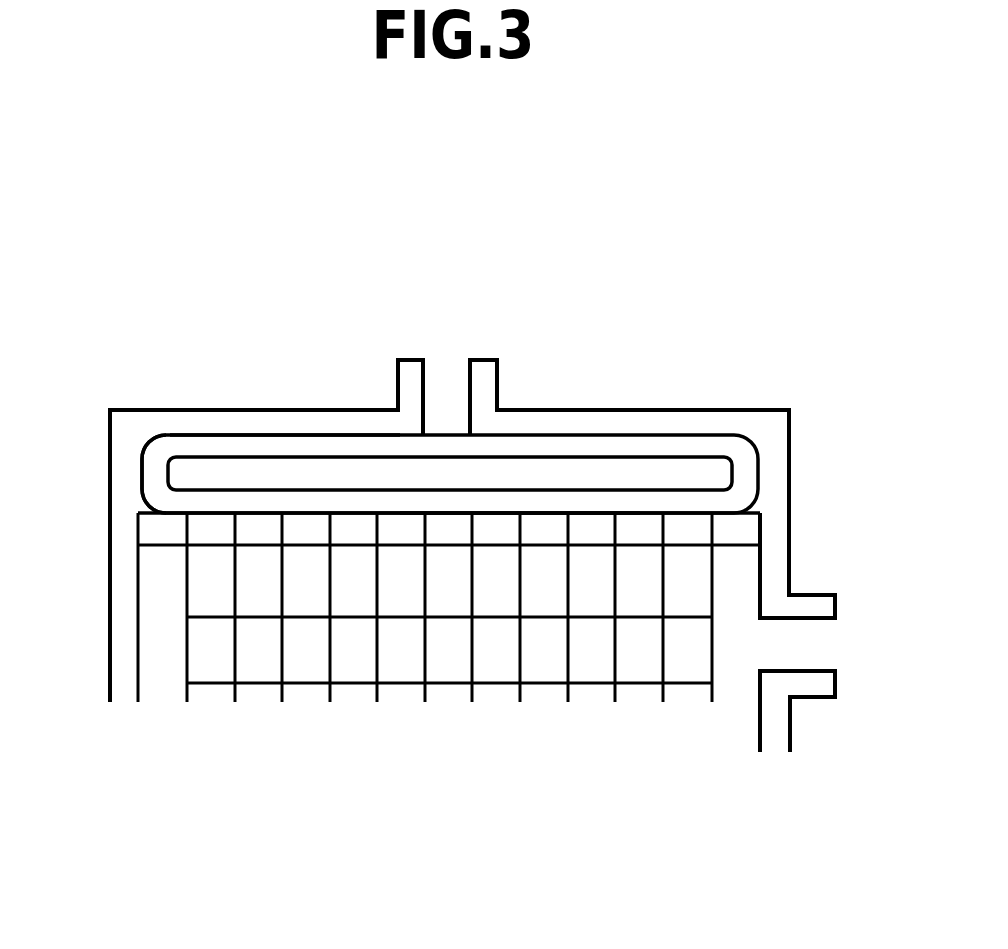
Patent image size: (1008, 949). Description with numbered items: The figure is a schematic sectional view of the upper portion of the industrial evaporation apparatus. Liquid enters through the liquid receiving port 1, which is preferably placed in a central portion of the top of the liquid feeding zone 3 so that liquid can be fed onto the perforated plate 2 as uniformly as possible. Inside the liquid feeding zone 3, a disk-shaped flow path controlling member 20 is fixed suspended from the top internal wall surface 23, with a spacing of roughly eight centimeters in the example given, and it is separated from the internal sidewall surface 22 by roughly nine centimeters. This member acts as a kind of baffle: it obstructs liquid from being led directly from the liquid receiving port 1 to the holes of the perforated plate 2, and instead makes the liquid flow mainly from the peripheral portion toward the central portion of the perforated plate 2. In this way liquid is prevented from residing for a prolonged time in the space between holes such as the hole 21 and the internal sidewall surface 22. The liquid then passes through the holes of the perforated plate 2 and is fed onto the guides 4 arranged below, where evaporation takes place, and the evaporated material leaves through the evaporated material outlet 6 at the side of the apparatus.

The liquid receiving port 1 is at (443, 366).
The perforated plate 2 is at (342, 511).
The liquid feeding zone 3 is at (673, 450).
The guide 4 is at (308, 693).
The evaporated material outlet 6 is at (826, 648).
The flow path controlling member 20 is at (588, 472).
The hole of perforated plate 21 is at (521, 510).
The internal sidewall surface of liquid feeding zone 22 is at (146, 462).
The top internal wall surface of liquid feeding zone 23 is at (276, 437).